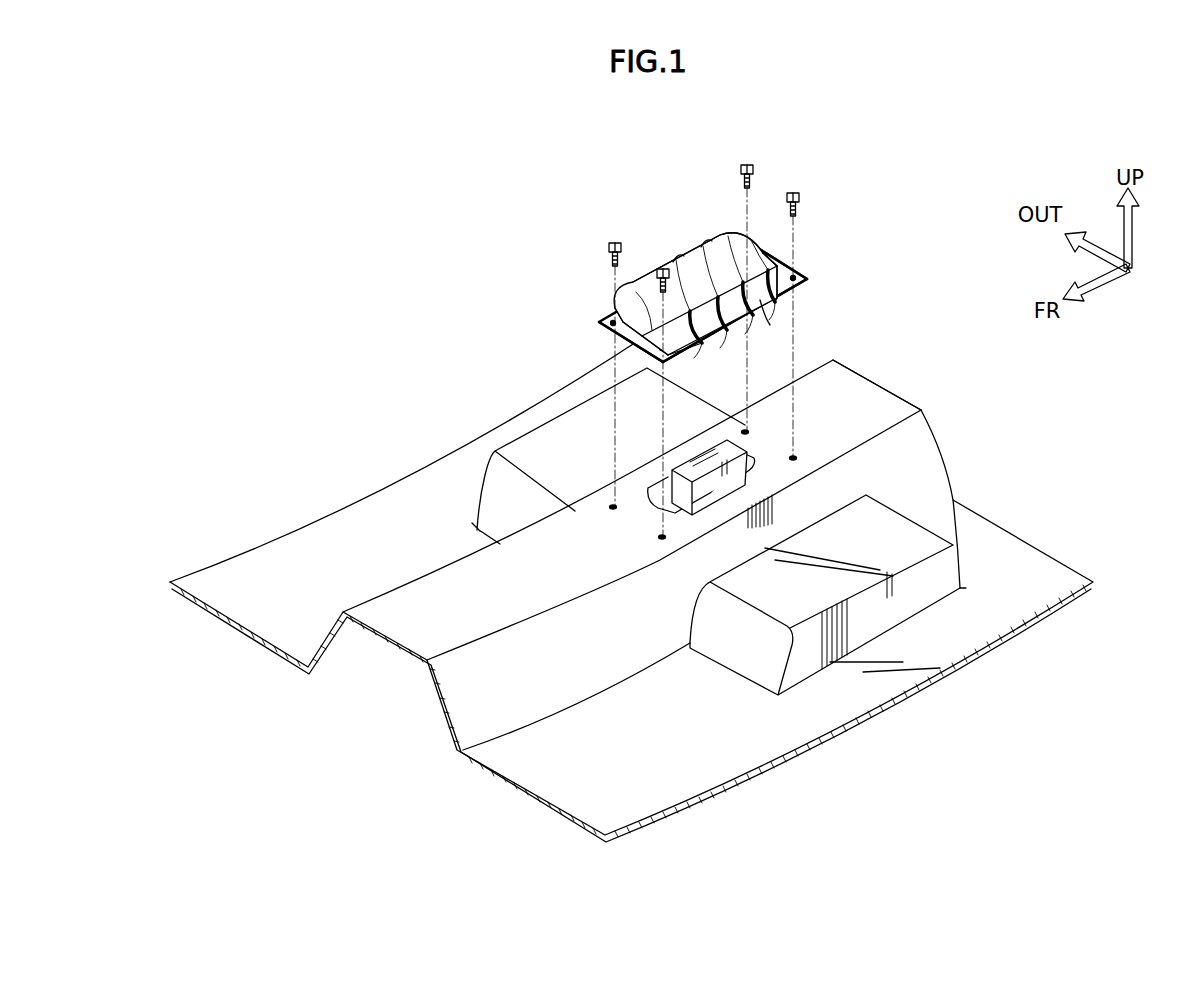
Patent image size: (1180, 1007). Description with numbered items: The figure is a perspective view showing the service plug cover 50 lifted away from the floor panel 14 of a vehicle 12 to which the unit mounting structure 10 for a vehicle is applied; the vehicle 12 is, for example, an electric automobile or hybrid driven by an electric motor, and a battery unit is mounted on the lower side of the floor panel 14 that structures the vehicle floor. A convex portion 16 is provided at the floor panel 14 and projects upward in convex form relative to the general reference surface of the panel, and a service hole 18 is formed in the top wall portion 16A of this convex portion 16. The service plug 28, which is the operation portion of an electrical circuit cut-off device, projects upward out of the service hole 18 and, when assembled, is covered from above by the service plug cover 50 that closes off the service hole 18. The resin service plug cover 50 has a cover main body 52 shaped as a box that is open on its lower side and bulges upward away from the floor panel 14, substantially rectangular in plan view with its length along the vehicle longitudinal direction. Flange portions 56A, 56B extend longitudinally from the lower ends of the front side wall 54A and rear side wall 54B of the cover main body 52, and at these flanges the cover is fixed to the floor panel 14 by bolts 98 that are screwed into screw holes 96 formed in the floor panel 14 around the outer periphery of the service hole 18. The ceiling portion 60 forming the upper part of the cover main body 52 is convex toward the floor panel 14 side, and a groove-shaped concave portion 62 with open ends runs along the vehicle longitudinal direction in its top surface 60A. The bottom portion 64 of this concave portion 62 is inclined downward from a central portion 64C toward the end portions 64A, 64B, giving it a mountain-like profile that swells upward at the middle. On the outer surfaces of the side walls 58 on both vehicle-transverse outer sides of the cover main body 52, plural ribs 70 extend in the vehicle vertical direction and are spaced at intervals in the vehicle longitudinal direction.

The unit mounting structure for a vehicle 10 is at (832, 320).
The vehicle 12 is at (968, 176).
The floor panel 14 is at (988, 520).
The convex portion 16 is at (888, 402).
The top wall portion 16A is at (863, 388).
The service hole 18 is at (760, 468).
The service plug 28 is at (708, 487).
The service plug cover 50 is at (689, 288).
The cover main body 52 is at (726, 295).
The front side wall 54A is at (600, 318).
The rear side wall 54B is at (788, 252).
The flange portion 56A is at (597, 326).
The flange portion 56B is at (810, 279).
The side walls 58 is at (648, 290).
The ceiling portion 60 is at (737, 238).
The top surface 60A is at (716, 240).
The concave portion 62 is at (772, 250).
The bottom portion 64 is at (756, 322).
The end portion 64A is at (647, 335).
The end portion 64B is at (795, 305).
The central portion 64C is at (709, 345).
The ribs 70 is at (778, 310).
The screw holes 96 is at (611, 508).
The bolts 98 is at (750, 167).